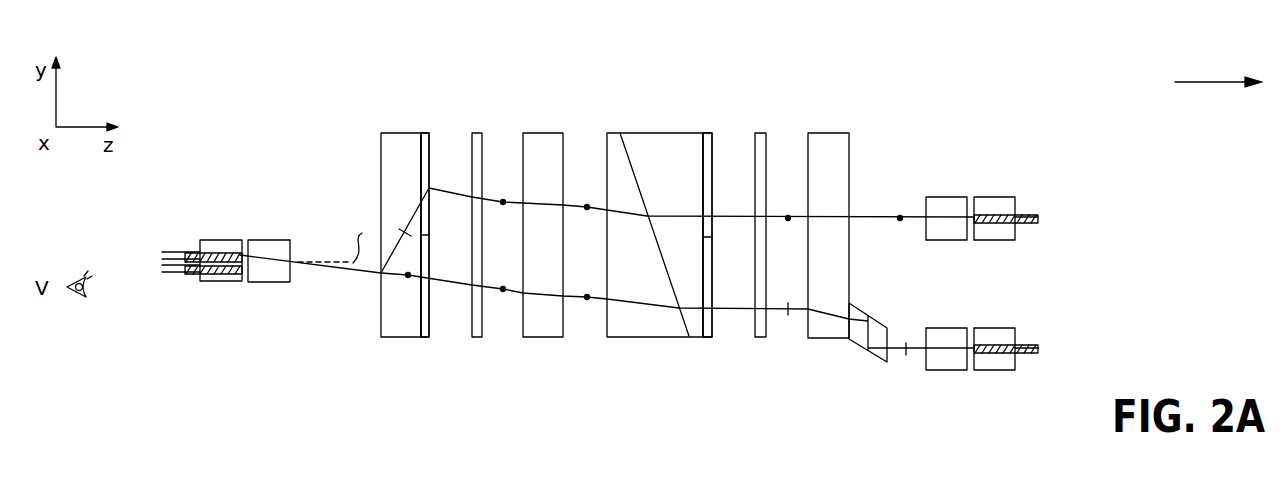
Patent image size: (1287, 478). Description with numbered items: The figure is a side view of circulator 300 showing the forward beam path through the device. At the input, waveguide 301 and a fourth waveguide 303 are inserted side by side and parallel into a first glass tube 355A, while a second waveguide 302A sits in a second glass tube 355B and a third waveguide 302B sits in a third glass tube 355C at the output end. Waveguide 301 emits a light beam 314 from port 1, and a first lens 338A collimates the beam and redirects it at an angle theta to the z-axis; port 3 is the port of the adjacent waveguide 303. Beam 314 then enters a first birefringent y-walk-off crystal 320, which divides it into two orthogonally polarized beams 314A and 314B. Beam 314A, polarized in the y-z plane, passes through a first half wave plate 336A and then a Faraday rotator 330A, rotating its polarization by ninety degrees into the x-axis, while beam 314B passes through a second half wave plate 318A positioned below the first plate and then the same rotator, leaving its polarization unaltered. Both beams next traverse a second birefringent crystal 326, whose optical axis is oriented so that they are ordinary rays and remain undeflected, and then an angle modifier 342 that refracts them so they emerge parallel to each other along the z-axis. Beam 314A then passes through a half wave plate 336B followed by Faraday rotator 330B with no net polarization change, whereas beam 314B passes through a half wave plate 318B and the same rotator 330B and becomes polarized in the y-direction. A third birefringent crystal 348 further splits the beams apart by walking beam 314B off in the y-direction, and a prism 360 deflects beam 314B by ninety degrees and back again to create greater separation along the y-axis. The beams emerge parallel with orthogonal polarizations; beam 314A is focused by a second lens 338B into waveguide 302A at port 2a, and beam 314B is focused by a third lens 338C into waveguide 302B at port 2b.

The circulator 300 is at (303, 82).
The waveguide 301 is at (217, 240).
The fourth waveguide 303 is at (217, 281).
The first glass tube 355A is at (228, 281).
The first lens 338A is at (257, 240).
The light beam 314 is at (310, 262).
The first beam 314A is at (503, 200).
The second beam 314B is at (503, 291).
The first birefringent crystal 320 is at (395, 338).
The first half wave plate 336A is at (427, 133).
The second half wave plate 318A is at (427, 337).
The Faraday rotator 330A is at (477, 337).
The second birefringent crystal 326 is at (547, 133).
The angle modifier 342 is at (649, 133).
The half wave plate 336B is at (707, 133).
The half wave plate 318B is at (708, 337).
The Faraday rotator 330B is at (760, 337).
The third birefringent crystal 348 is at (827, 133).
The prism 360 is at (857, 350).
The second lens 338B is at (943, 197).
The third lens 338C is at (943, 370).
The second glass tube 355B is at (985, 197).
The third glass tube 355C is at (988, 328).
The second waveguide 302A is at (997, 215).
The third waveguide 302B is at (1000, 345).
The port 1 is at (171, 248).
The port 3 is at (171, 277).
The port 2a is at (1046, 221).
The port 2b is at (1045, 353).